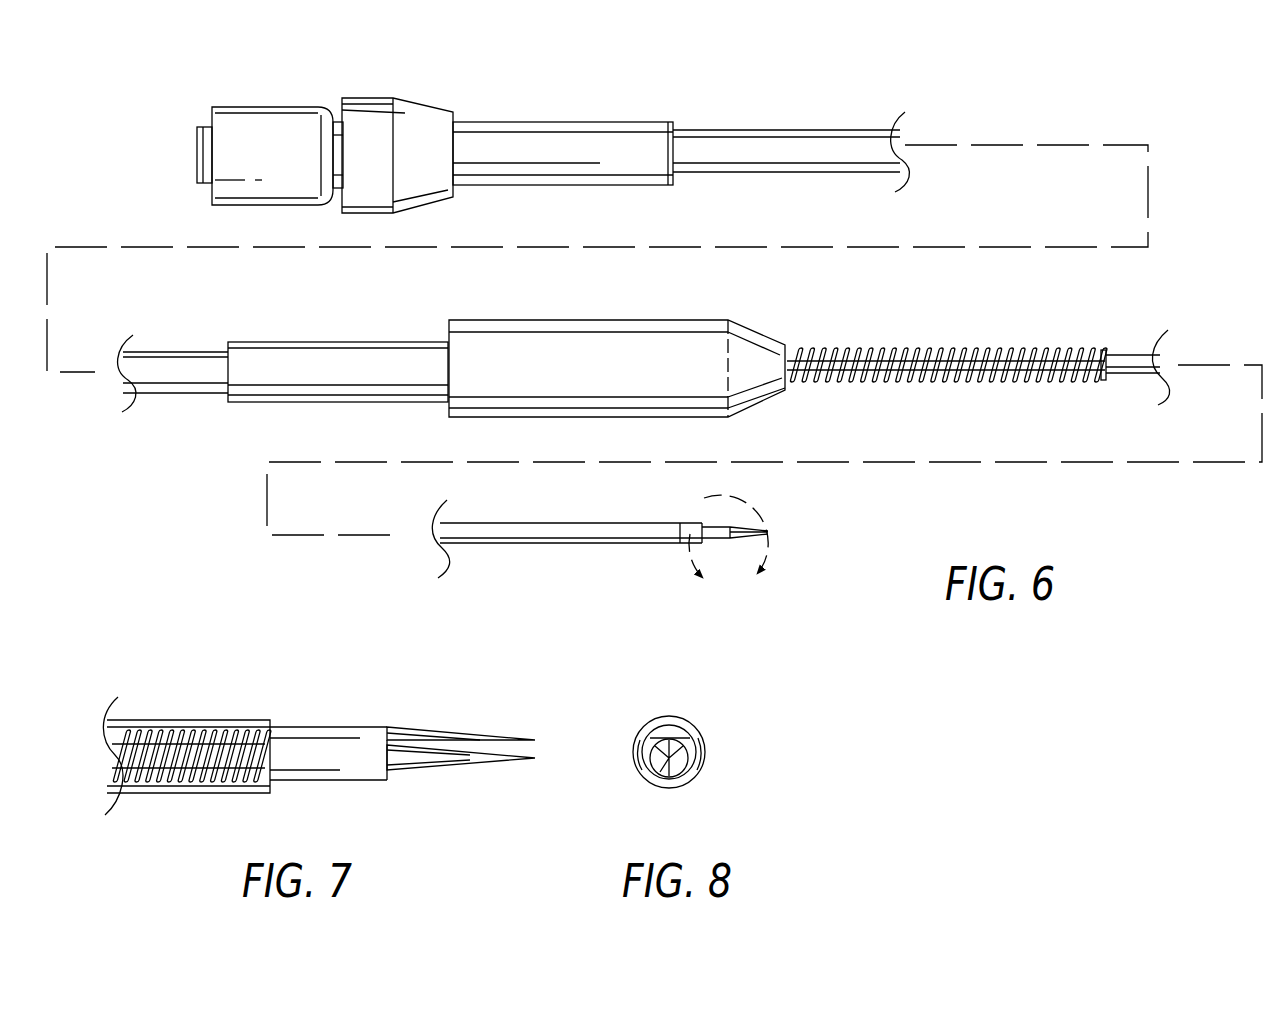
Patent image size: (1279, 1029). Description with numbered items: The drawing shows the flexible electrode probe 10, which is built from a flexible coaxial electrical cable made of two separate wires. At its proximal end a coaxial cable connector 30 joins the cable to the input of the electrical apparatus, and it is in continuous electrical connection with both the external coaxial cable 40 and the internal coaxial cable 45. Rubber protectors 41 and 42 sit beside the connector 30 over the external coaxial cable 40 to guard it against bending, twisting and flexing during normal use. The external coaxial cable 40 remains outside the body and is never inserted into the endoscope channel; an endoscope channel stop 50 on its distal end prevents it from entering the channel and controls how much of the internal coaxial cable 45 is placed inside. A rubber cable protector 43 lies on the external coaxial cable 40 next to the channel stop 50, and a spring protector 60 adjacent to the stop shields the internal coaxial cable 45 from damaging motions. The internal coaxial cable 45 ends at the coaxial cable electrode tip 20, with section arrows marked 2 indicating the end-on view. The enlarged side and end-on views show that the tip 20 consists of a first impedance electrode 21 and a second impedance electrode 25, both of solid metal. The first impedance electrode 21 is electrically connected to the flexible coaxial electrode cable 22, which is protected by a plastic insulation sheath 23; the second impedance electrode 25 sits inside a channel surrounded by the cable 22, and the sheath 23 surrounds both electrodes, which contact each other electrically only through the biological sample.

In FIG. 6, the flexible electrode probe 10 is at (720, 70).
In FIG. 6, the coaxial cable connector 30 is at (275, 105).
In FIG. 6, the external coaxial cable 40 is at (339, 120).
In FIG. 6, the rubber protector 41 is at (372, 97).
In FIG. 6, the rubber protector 42 is at (510, 120).
In FIG. 6, the rubber cable protector 43 is at (345, 340).
In FIG. 6, the endoscope channel stop 50 is at (580, 318).
In FIG. 6, the spring protector 60 is at (930, 348).
In FIG. 6, the internal coaxial cable 45 is at (1120, 353).
In FIG. 6, the coaxial cable electrode tip 20 is at (745, 512).
In FIG. 7, the coaxial cable electrode tip 20 is at (288, 683).
In FIG. 8, the coaxial cable electrode tip 20 is at (780, 786).
In FIG. 6, the section view indicator 2 is at (732, 552).
In FIG. 7, the first impedance electrode 21 is at (340, 726).
In FIG. 8, the first impedance electrode 21 is at (680, 730).
In FIG. 7, the flexible coaxial electrode cable 22 is at (125, 763).
In FIG. 7, the plastic insulation sheath 23 is at (178, 795).
In FIG. 8, the plastic insulation sheath 23 is at (670, 720).
In FIG. 7, the second impedance electrode 25 is at (436, 772).
In FIG. 8, the second impedance electrode 25 is at (684, 766).